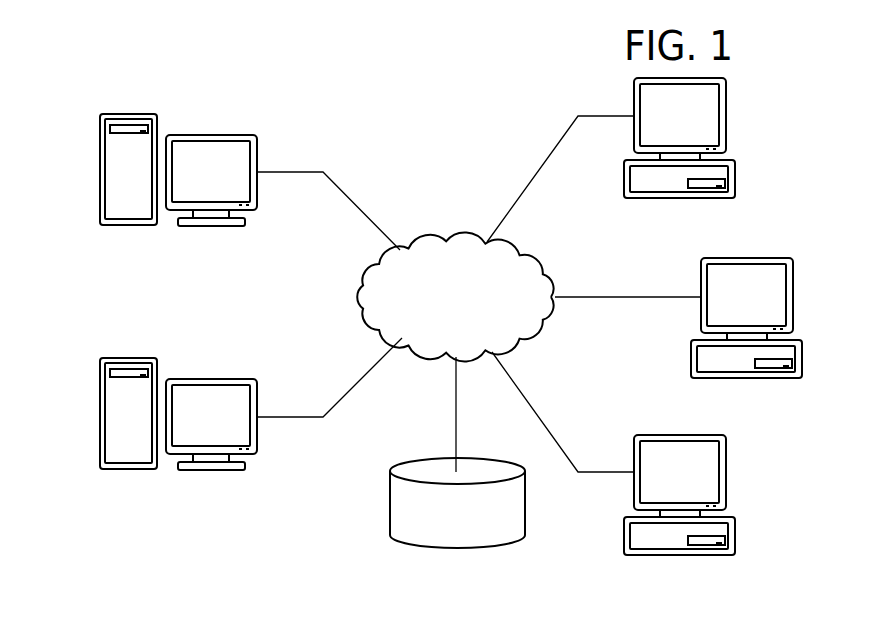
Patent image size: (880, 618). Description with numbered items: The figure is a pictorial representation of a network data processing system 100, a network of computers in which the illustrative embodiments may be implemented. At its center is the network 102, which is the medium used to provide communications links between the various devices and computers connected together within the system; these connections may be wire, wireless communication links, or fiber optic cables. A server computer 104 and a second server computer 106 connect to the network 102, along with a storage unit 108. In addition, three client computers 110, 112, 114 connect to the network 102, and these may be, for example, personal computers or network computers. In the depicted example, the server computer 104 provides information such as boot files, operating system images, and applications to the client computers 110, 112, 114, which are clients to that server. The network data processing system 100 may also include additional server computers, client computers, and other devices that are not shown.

The network data processing system 100 is at (329, 85).
The network 102 is at (448, 237).
The server computer 104 is at (99, 157).
The server computer 106 is at (99, 425).
The storage unit 108 is at (386, 506).
The client computer 110 is at (736, 178).
The client computer 112 is at (803, 357).
The client computer 114 is at (734, 536).